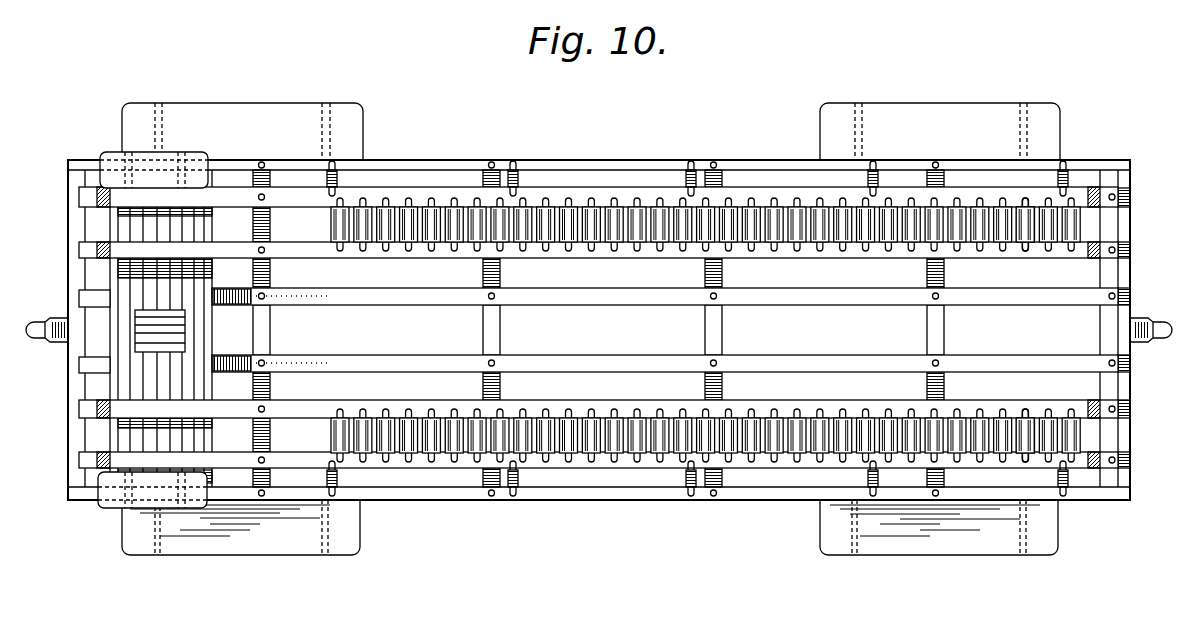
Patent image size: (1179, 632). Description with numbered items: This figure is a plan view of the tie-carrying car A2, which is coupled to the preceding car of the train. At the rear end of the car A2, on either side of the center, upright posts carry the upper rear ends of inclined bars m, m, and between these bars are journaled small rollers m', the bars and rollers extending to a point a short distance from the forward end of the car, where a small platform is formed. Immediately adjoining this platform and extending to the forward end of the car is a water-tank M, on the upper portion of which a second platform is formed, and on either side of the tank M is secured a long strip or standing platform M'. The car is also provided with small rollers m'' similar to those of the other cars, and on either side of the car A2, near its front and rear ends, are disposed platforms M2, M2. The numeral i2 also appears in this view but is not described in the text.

The water-tank M is at (165, 328).
The standing platform M' is at (153, 330).
The platforms M2 is at (591, 329).
The inclined bars m is at (713, 328).
The small rollers m' is at (1026, 330).
The small rollers m'' is at (728, 328).
The tie-carrying car A2 is at (599, 330).
The pivot bolts i2 is at (1118, 200).